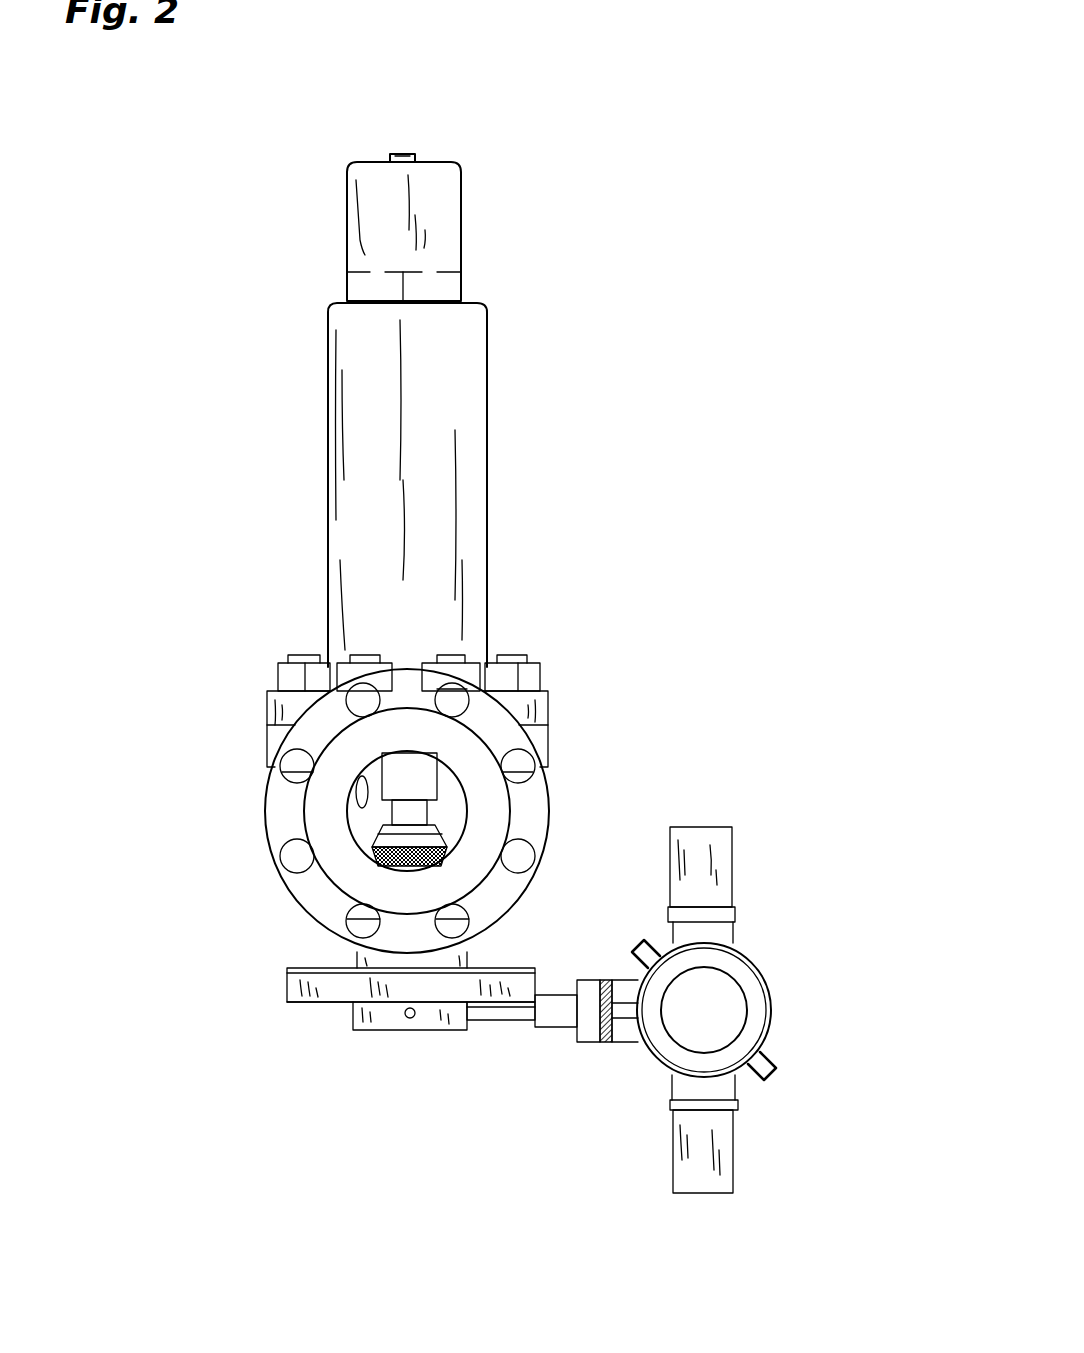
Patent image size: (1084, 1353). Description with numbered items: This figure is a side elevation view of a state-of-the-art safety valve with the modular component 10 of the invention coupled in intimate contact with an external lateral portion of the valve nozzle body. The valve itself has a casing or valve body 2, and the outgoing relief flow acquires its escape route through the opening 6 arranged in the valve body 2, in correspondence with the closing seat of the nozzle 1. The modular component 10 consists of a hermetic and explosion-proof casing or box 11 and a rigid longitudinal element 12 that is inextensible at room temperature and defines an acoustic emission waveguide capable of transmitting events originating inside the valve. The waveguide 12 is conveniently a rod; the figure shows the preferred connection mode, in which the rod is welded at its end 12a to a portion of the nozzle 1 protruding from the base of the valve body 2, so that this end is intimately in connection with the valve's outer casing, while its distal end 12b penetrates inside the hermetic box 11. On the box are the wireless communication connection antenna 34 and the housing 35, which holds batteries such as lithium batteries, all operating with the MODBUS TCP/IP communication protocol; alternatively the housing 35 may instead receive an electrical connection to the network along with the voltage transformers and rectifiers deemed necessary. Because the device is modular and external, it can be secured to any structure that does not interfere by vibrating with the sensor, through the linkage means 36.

The valve body 2 is at (490, 490).
The opening 6 is at (360, 773).
The nozzle 1 is at (352, 1013).
The rigid longitudinal element 12 is at (510, 1022).
The waveguide end 12a is at (475, 1015).
The distal end 12b is at (528, 1018).
The modular component 10 is at (847, 1180).
The hermetic and explosion-proof casing 11 is at (760, 957).
The wireless communication connection antenna 34 is at (707, 847).
The battery housing 35 is at (703, 1168).
The linkage means 36 is at (780, 1052).